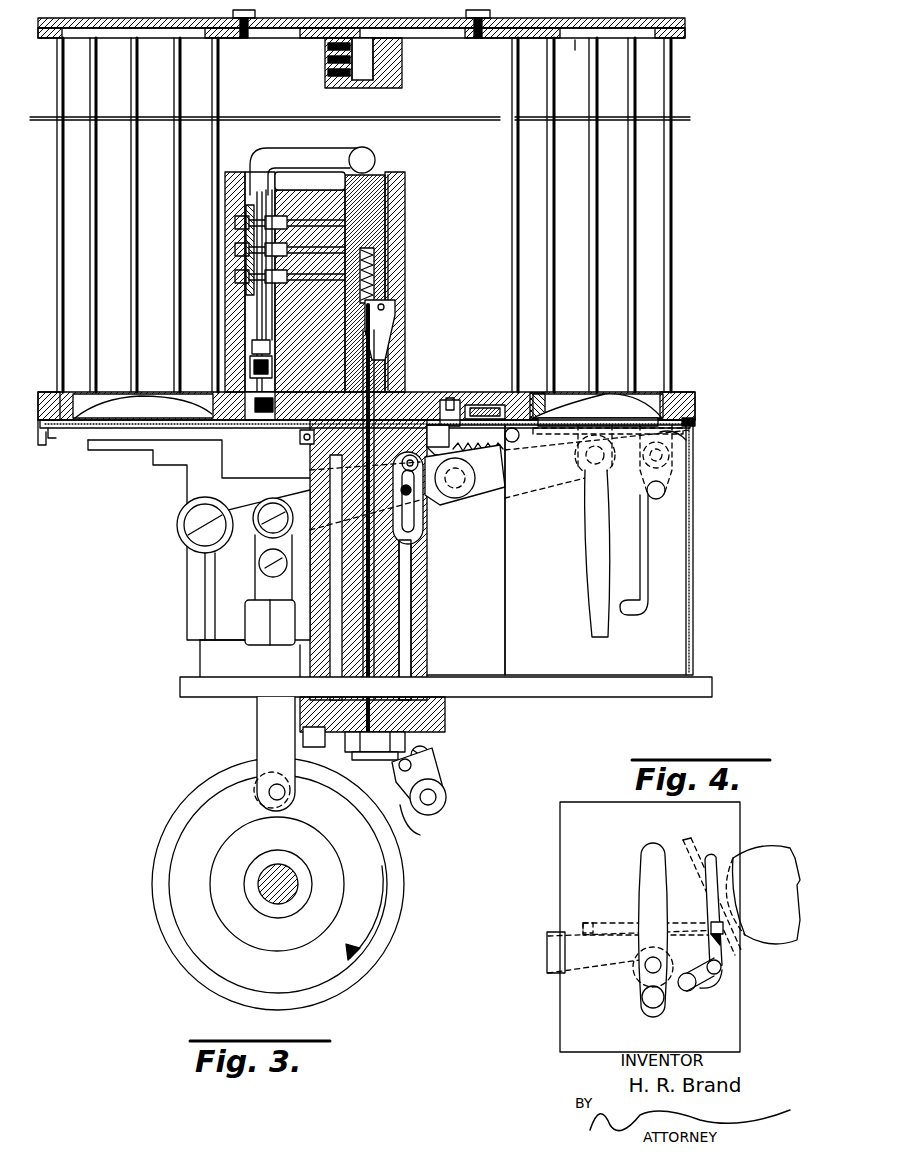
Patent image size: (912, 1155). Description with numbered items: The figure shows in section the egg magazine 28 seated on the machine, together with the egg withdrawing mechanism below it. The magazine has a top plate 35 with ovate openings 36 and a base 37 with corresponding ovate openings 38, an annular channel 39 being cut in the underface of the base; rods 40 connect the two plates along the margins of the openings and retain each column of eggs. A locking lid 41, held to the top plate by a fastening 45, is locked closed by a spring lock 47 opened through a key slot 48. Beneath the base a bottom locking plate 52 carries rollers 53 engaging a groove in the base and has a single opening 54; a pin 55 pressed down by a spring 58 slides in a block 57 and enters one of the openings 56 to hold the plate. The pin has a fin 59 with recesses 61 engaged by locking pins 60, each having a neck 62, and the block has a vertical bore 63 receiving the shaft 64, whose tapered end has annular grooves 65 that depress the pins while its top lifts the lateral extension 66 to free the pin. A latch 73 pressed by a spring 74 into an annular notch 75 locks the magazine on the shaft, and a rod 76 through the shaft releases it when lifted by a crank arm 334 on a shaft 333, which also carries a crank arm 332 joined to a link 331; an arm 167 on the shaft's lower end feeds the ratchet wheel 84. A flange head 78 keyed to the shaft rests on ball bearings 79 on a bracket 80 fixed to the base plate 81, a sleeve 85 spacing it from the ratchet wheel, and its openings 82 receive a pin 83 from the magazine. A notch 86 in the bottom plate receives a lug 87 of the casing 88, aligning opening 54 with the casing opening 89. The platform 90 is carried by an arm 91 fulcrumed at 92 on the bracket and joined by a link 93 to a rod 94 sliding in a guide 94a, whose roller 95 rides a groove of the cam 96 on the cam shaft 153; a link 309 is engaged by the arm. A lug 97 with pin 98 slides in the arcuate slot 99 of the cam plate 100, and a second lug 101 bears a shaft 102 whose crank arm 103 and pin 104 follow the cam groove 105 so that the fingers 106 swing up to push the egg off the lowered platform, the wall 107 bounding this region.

In FIG. 3, the egg magazine 28 is at (686, 169).
In FIG. 3, the top plate 35 is at (441, 30).
In FIG. 3, the ovate openings 36 is at (575, 55).
In FIG. 3, the base 37 is at (420, 412).
In FIG. 3, the ovate openings 38 is at (560, 398).
In FIG. 3, the annular channel 39 is at (608, 392).
In FIG. 3, the rods 40 is at (90, 236).
In FIG. 3, the locking lid 41 is at (282, 40).
In FIG. 3, the screw 45 is at (244, 40).
In FIG. 3, the spring lock 47 is at (330, 72).
In FIG. 3, the key slot 48 is at (362, 78).
In FIG. 3, the bottom locking plate 52 is at (140, 420).
In FIG. 3, the rollers 53 is at (50, 396).
In FIG. 3, the ovate opening 54 is at (690, 412).
In FIG. 3, the pin 55 is at (258, 352).
In FIG. 3, the openings 56 is at (480, 410).
In FIG. 3, the block 57 is at (400, 232).
In FIG. 3, the spring 58 is at (255, 370).
In FIG. 3, the fin 59 is at (263, 318).
In FIG. 3, the locking pins 60 is at (275, 222).
In FIG. 3, the recesses 61 is at (260, 215).
In FIG. 3, the neck 62 is at (250, 293).
In FIG. 3, the vertical bore 63 is at (385, 172).
In FIG. 3, the shaft 64 is at (372, 200).
In FIG. 3, the annular grooves 65 is at (395, 222).
In FIG. 3, the lateral extension 66 is at (360, 148).
In FIG. 3, the latch 73 is at (390, 318).
In FIG. 3, the spring 74 is at (375, 275).
In FIG. 3, the annular notch 75 is at (380, 348).
In FIG. 3, the rod 76 is at (375, 372).
In FIG. 3, the flange head 78 is at (450, 400).
In FIG. 3, the ball bearings 79 is at (312, 440).
In FIG. 3, the bracket 80 is at (472, 660).
In FIG. 3, the base plate 81 is at (527, 690).
In FIG. 3, the openings 82 is at (298, 436).
In FIG. 3, the pin 83 is at (440, 450).
In FIG. 3, the ratchet wheel 84 is at (440, 722).
In FIG. 3, the sleeve 85 is at (410, 596).
In FIG. 3, the notch 86 is at (40, 445).
In FIG. 3, the lug 87 is at (52, 438).
In FIG. 3, the casing 88 is at (70, 428).
In FIG. 3, the opening 89 is at (690, 432).
In FIG. 3, the platform 90 is at (560, 430).
In FIG. 4, the platform 90 is at (658, 920).
In FIG. 3, the arm 91 is at (480, 497).
In FIG. 3, the fulcrum 92 is at (192, 525).
In FIG. 3, the link 93 is at (262, 567).
In FIG. 3, the rod 94 is at (270, 718).
In FIG. 3, the guide 94a is at (252, 610).
In FIG. 3, the roller 95 is at (262, 798).
In FIG. 3, the cam 96 is at (158, 862).
In FIG. 3, the lug 97 is at (582, 470).
In FIG. 3, the pin 98 is at (592, 498).
In FIG. 4, the pin 98 is at (650, 1005).
In FIG. 3, the arcuate slot 99 is at (595, 565).
In FIG. 4, the arcuate slot 99 is at (648, 875).
In FIG. 3, the cam plate 100 is at (685, 527).
In FIG. 4, the cam plate 100 is at (560, 867).
In FIG. 3, the lug 101 is at (639, 475).
In FIG. 4, the lug 101 is at (722, 945).
In FIG. 3, the shaft 102 is at (670, 456).
In FIG. 4, the shaft 102 is at (722, 968).
In FIG. 4, the crank arm 103 is at (700, 990).
In FIG. 3, the pin 104 is at (652, 494).
In FIG. 4, the pin 104 is at (687, 992).
In FIG. 3, the cam groove 105 is at (652, 538).
In FIG. 4, the cam groove 105 is at (712, 862).
In FIG. 3, the fingers 106 is at (618, 426).
In FIG. 4, the fingers 106 is at (702, 838).
In FIG. 3, the wall 107 is at (692, 478).
In FIG. 3, the cam shaft 153 is at (278, 868).
In FIG. 3, the arm 167 is at (405, 742).
In FIG. 3, the link 309 is at (412, 543).
In FIG. 3, the link 331 is at (303, 738).
In FIG. 3, the crank arm 332 is at (435, 760).
In FIG. 3, the shaft 333 is at (446, 797).
In FIG. 3, the crank arm 334 is at (428, 832).